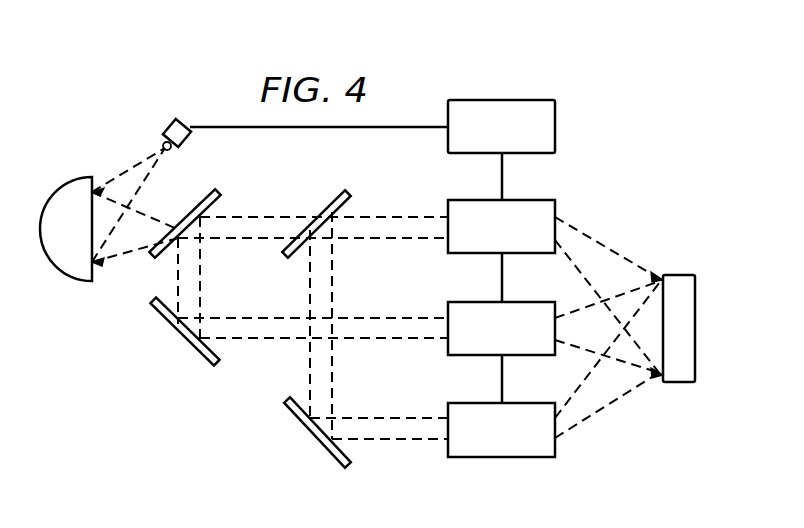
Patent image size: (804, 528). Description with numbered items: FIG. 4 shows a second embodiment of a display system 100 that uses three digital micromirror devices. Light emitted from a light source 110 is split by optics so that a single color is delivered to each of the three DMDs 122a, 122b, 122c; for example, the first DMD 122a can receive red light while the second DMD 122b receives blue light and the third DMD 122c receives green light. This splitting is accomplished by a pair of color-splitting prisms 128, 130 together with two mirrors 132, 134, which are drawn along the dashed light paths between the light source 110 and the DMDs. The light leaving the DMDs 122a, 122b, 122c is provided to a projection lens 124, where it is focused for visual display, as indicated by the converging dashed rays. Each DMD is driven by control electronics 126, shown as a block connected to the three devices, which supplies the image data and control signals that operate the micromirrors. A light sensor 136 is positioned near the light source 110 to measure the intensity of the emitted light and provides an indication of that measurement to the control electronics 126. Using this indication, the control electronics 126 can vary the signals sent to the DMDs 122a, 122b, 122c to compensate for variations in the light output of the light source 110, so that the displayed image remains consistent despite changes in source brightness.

The display system 100 is at (438, 67).
The light source 110 is at (78, 182).
The DMD 122a is at (555, 200).
The DMD 122b is at (460, 357).
The DMD 122c is at (512, 458).
The projection lens 124 is at (695, 332).
The control electronics 126 is at (555, 125).
The color-splitting prism 128 is at (217, 194).
The color-splitting prism 130 is at (346, 194).
The mirror 132 is at (178, 338).
The mirror 134 is at (310, 432).
The light sensor 136 is at (170, 125).